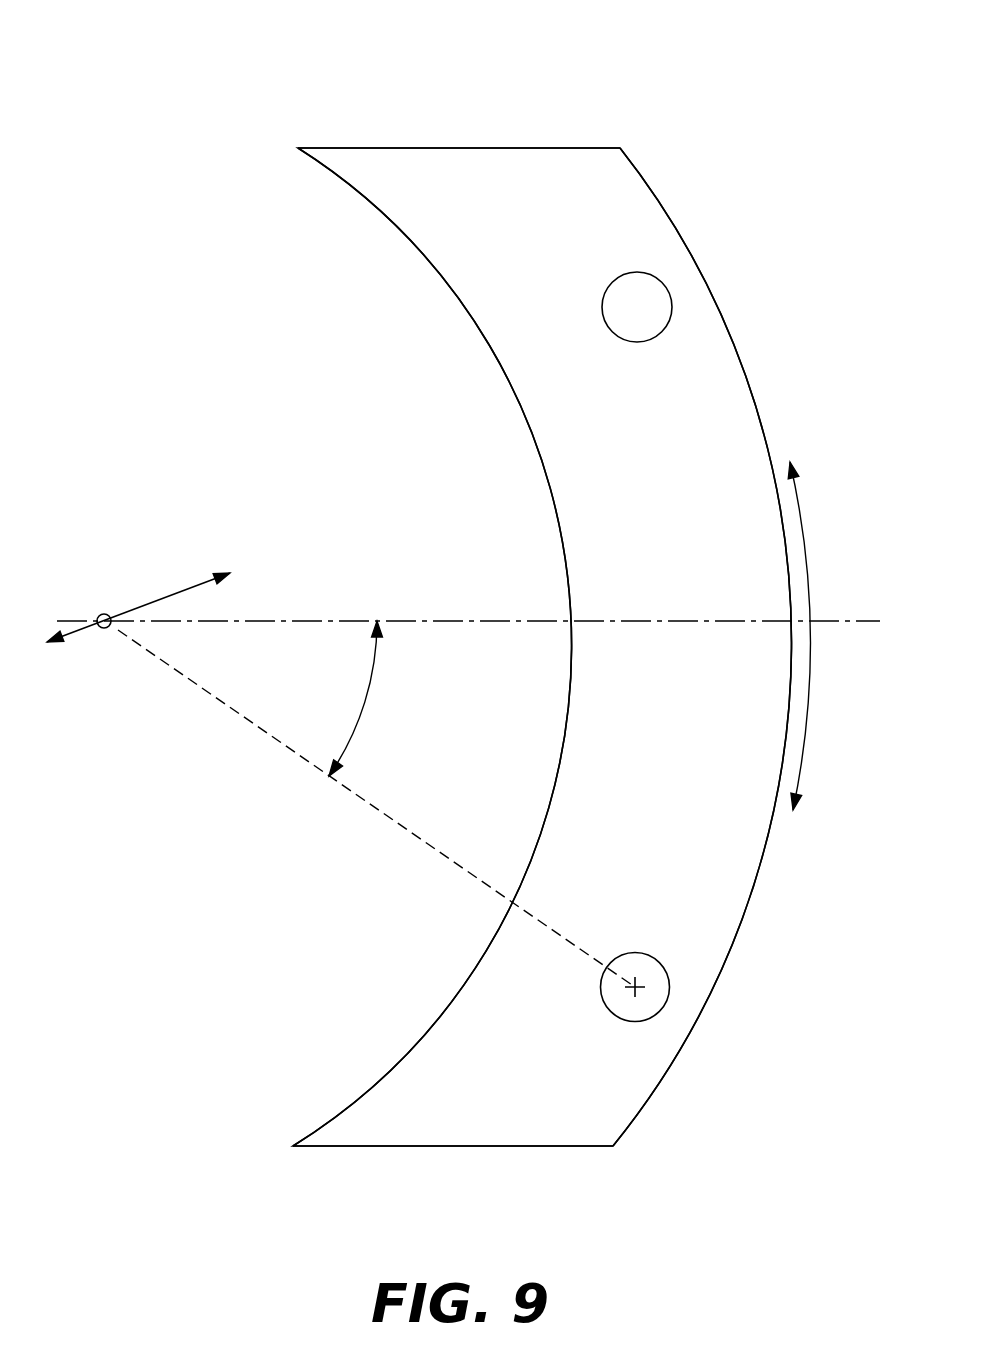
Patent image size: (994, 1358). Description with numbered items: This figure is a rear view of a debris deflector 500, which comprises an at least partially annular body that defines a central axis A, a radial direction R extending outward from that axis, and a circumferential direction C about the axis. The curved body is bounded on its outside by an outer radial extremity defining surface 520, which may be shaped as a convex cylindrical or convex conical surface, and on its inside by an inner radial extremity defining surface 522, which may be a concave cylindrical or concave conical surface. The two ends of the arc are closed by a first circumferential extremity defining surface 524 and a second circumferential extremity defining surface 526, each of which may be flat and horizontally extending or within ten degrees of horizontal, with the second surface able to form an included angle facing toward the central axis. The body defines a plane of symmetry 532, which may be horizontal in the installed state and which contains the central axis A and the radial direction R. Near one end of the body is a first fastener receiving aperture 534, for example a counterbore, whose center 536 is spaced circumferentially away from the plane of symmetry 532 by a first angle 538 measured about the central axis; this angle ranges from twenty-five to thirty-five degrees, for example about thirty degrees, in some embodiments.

The debris deflector 500 is at (792, 100).
The outer radial extremity defining surface 520 is at (736, 938).
The inner radial extremity defining surface 522 is at (461, 978).
The first circumferential extremity defining surface 524 is at (556, 1146).
The second circumferential extremity defining surface 526 is at (568, 148).
The plane of symmetry 532 is at (866, 618).
The first fastener receiving aperture 534 is at (649, 989).
The center 536 is at (647, 1018).
The first angle 538 is at (367, 707).
The central axis A is at (106, 628).
The radial direction R is at (179, 592).
The circumferential direction C is at (805, 745).